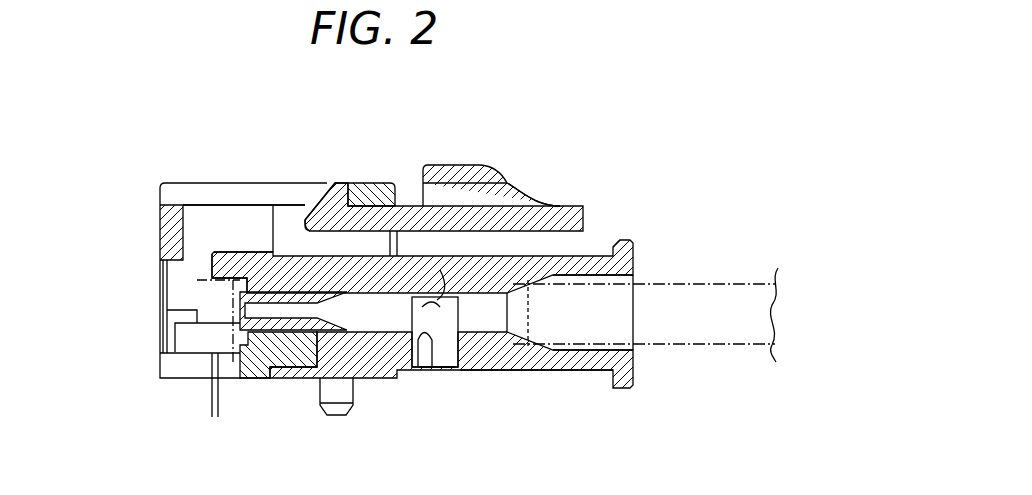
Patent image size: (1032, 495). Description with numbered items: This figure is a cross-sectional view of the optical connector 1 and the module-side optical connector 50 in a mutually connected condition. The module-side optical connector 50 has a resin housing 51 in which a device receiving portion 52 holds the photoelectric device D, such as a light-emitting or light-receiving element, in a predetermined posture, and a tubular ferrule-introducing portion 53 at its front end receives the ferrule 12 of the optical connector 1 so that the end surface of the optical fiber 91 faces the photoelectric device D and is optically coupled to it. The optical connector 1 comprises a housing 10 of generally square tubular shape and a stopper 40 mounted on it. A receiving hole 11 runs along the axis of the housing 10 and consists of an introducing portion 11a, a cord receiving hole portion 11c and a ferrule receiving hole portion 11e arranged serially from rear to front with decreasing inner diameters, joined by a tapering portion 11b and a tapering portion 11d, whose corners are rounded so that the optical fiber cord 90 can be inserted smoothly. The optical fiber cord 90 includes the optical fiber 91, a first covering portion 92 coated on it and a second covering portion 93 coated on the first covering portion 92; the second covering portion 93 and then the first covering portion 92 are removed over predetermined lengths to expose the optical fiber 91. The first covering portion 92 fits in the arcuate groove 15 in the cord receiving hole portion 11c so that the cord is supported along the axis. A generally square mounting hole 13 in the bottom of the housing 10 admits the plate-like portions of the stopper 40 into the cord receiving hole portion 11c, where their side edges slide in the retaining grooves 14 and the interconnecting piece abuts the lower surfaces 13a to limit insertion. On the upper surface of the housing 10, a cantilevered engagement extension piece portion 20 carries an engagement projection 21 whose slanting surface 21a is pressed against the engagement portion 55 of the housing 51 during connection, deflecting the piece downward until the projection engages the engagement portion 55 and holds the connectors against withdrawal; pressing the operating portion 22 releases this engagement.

The optical connector 1 is at (592, 138).
The housing 10 is at (585, 218).
The receiving hole 11 is at (637, 274).
The introducing portion 11a is at (622, 315).
The tapering portion 11b is at (555, 373).
The cord receiving hole portion 11c is at (484, 373).
The tapering portion 11d is at (322, 256).
The ferrule receiving hole portion 11e is at (248, 382).
The ferrule 12 is at (262, 344).
The mounting hole 13 is at (407, 325).
The lower surfaces 13a is at (428, 375).
The retaining grooves 14 is at (424, 362).
The groove 15 is at (440, 270).
The engagement extension piece portion 20 is at (412, 205).
The engagement projection 21 is at (337, 195).
The slanting surface 21a is at (296, 205).
The operating portion 22 is at (502, 170).
The stopper 40 is at (412, 370).
The module-side optical connector 50 is at (237, 132).
The housing 51 is at (213, 215).
The device receiving portion 52 is at (164, 288).
The ferrule-introducing portion 53 is at (276, 380).
The engagement portion 55 is at (374, 185).
The optical fiber cord 90 is at (733, 357).
The optical fiber 91 is at (346, 255).
The first covering portion 92 is at (522, 374).
The second covering portion 93 is at (663, 347).
The photoelectric device D is at (155, 318).